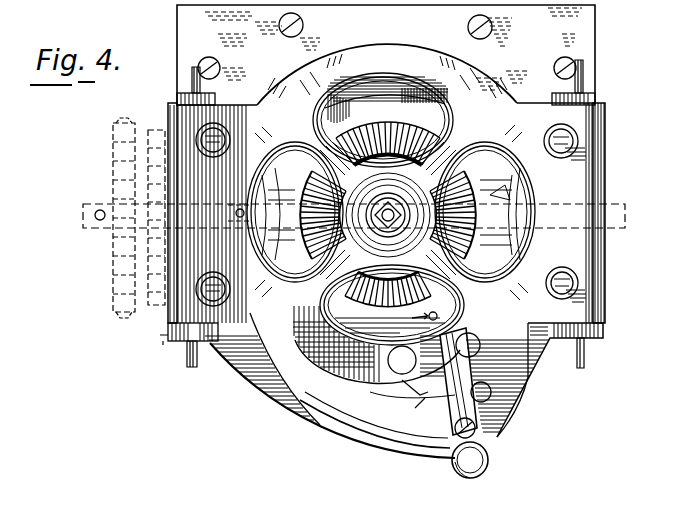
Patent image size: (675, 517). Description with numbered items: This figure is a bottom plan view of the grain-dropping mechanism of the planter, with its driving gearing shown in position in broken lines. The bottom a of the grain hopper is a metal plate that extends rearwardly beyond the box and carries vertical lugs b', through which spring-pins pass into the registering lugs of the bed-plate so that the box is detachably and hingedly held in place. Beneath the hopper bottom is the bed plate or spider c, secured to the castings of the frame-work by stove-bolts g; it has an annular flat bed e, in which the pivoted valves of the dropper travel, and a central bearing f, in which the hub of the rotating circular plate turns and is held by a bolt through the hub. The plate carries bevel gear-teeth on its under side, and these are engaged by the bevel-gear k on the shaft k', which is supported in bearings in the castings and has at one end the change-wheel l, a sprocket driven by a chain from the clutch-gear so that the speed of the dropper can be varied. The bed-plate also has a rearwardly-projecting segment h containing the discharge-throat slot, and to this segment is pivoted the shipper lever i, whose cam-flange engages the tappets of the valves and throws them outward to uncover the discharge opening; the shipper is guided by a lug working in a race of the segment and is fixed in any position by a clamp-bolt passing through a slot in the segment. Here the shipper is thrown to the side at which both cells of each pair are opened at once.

The bottom of the box a is at (386, 55).
The vertical lugs b' is at (394, 252).
The stove-bolts g is at (230, 140).
The bed plate or spider c is at (545, 188).
The bevel-gear k is at (330, 357).
The shaft k' is at (355, 230).
The change-wheel l is at (118, 258).
The bearing f is at (406, 205).
The rearwardly-projecting segment h is at (352, 370).
The shipper i is at (458, 381).
The annular flat surface or bed e is at (427, 311).